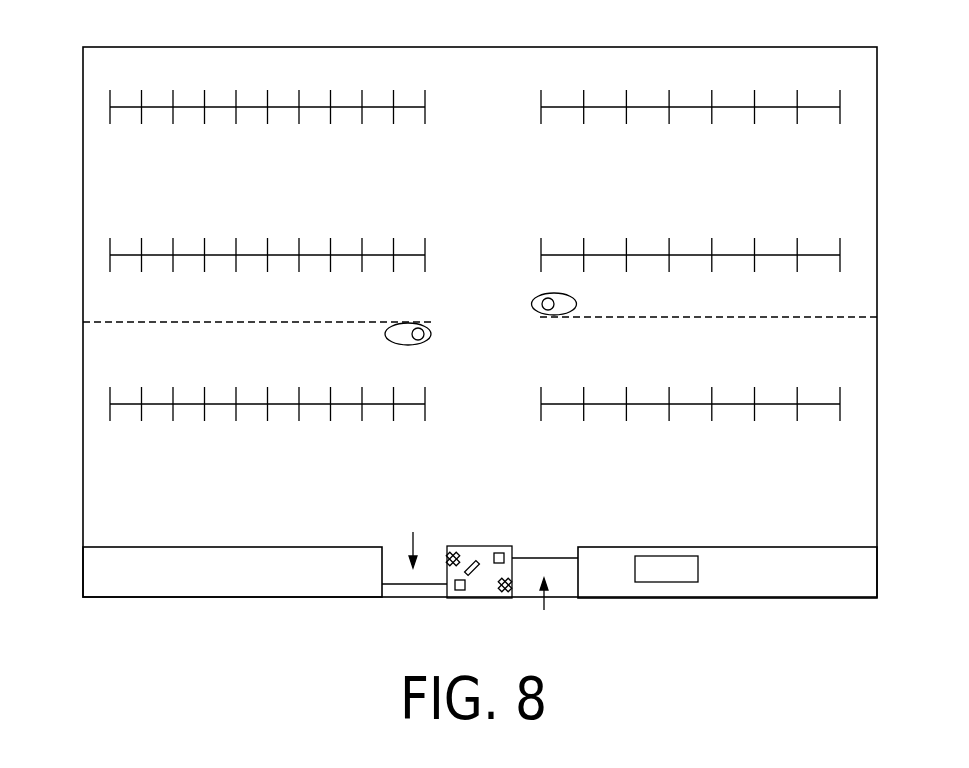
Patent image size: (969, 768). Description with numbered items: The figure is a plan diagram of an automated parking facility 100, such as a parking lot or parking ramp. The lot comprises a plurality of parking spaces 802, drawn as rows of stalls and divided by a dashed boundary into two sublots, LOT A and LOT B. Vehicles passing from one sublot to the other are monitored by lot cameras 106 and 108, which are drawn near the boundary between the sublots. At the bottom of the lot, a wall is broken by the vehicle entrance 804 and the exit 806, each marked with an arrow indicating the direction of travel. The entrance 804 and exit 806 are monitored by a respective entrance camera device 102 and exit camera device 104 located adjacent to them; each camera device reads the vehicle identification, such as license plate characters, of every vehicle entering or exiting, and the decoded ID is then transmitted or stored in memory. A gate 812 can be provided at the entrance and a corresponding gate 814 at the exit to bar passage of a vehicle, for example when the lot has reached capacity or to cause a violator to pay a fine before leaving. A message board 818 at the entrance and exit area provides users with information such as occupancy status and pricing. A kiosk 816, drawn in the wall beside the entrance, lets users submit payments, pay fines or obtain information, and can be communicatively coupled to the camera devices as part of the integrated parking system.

The parking facility 100 is at (480, 322).
The parking spaces 802 is at (649, 92).
The lot camera 106 is at (577, 302).
The lot camera 108 is at (417, 345).
The exit camera device 104 is at (459, 545).
The gate 812 is at (500, 549).
The gate 814 is at (462, 599).
The message board 818 is at (479, 562).
The entrance camera device 102 is at (502, 599).
The exit 806 is at (393, 515).
The entrance 804 is at (608, 621).
The kiosk 816 is at (700, 567).